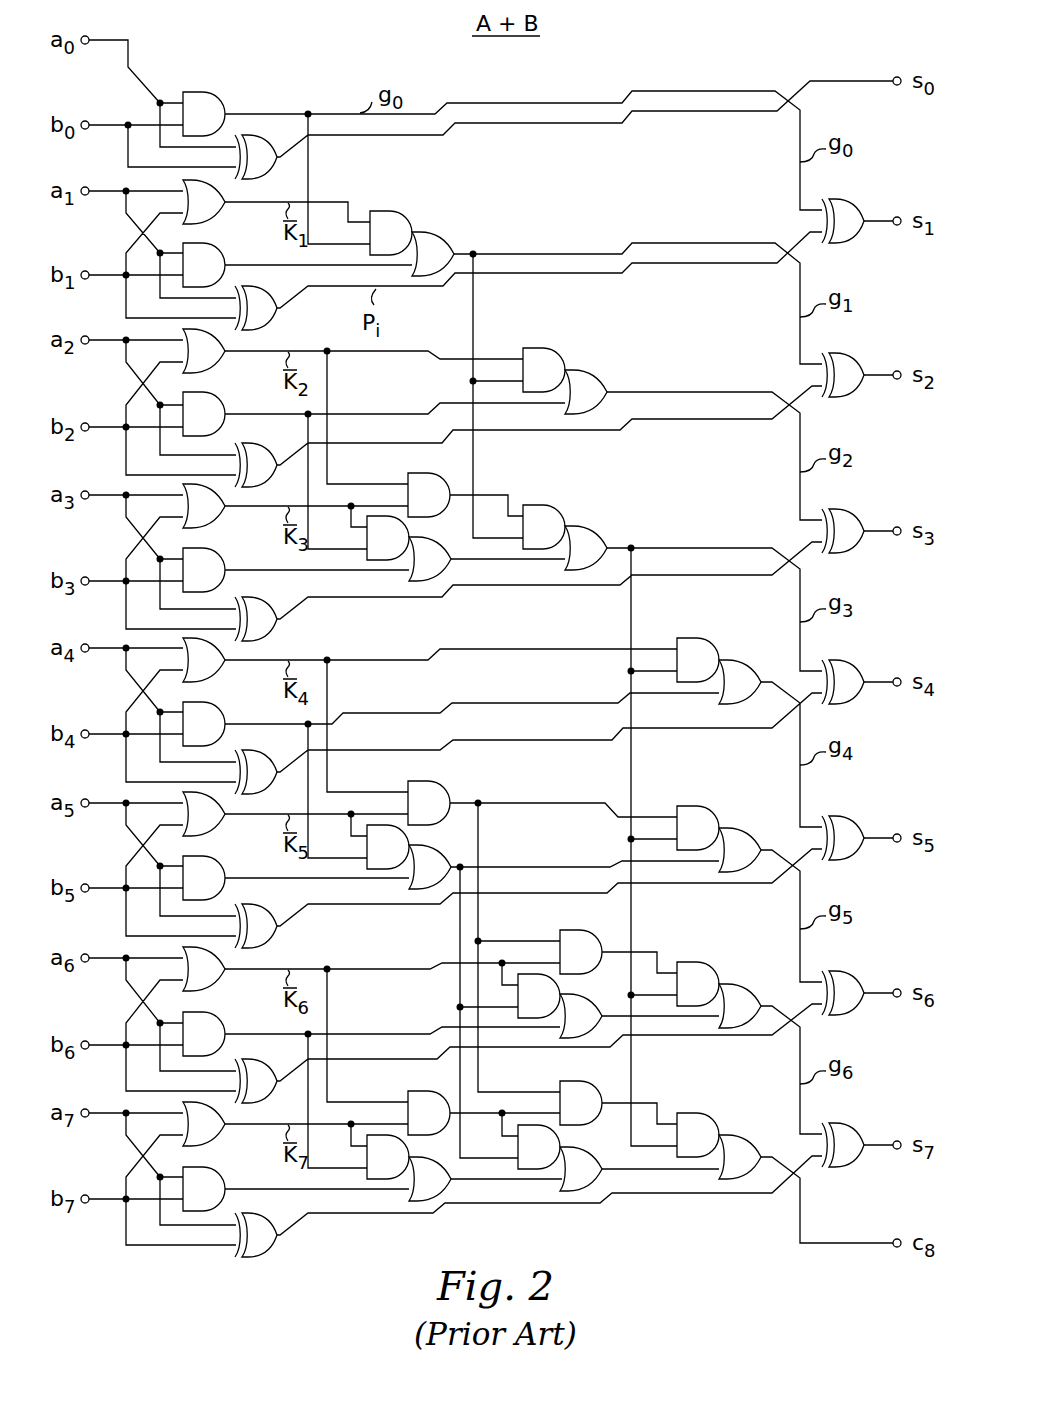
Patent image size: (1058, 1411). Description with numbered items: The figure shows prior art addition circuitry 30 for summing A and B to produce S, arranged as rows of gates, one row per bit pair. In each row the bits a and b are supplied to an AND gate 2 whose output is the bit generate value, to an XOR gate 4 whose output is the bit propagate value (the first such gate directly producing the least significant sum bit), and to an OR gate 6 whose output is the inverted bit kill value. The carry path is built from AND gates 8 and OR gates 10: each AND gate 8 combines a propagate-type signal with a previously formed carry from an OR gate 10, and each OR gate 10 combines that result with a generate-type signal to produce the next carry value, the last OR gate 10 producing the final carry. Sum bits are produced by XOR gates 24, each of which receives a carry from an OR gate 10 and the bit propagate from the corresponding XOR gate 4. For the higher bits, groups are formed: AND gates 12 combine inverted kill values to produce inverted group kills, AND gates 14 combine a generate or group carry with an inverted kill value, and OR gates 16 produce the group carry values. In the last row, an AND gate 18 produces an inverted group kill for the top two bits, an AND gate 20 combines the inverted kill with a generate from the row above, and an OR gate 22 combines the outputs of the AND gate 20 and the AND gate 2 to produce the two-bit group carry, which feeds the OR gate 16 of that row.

The AND gate 2 is at (223, 95).
The XOR gate 4 is at (255, 136).
The OR gate 6 is at (219, 213).
The AND gate 8 is at (396, 212).
The OR gate 10 is at (438, 233).
The AND gate 12 is at (416, 474).
The AND gate 14 is at (367, 541).
The OR gate 16 is at (449, 582).
The AND gate 18 is at (418, 1091).
The AND gate 20 is at (367, 1160).
The OR gate 22 is at (448, 1202).
The XOR gate 24 is at (842, 200).
The addition circuitry 30 is at (432, 84).